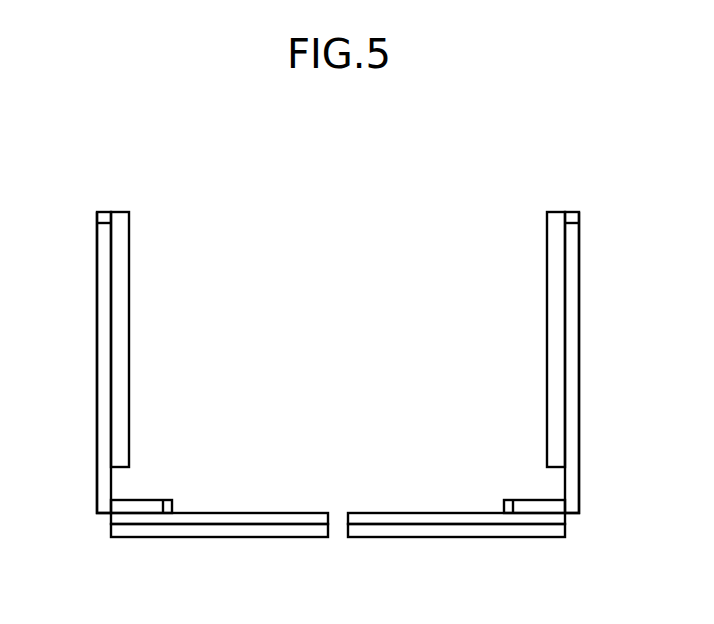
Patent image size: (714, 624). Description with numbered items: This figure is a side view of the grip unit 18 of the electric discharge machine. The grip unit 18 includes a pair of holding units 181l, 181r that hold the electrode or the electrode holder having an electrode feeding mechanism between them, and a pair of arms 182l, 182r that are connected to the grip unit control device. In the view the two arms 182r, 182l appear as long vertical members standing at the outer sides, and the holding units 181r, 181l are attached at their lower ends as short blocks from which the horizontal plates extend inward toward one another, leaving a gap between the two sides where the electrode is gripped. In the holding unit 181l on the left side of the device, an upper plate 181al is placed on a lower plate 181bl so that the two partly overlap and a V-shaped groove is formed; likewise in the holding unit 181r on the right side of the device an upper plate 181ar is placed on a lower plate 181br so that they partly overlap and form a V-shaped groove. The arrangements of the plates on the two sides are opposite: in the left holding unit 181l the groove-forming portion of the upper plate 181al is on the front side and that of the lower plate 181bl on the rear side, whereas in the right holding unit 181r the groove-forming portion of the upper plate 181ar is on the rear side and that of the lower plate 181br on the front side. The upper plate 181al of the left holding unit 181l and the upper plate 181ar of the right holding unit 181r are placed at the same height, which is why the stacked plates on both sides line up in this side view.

The grip unit 18 is at (327, 208).
The arm 182r is at (120, 274).
The arm 182l is at (557, 274).
The holding unit 181r is at (147, 503).
The holding unit 181l is at (531, 503).
The upper plate 181ar is at (272, 512).
The lower plate 181br is at (271, 538).
The upper plate 181al is at (404, 512).
The lower plate 181bl is at (403, 538).